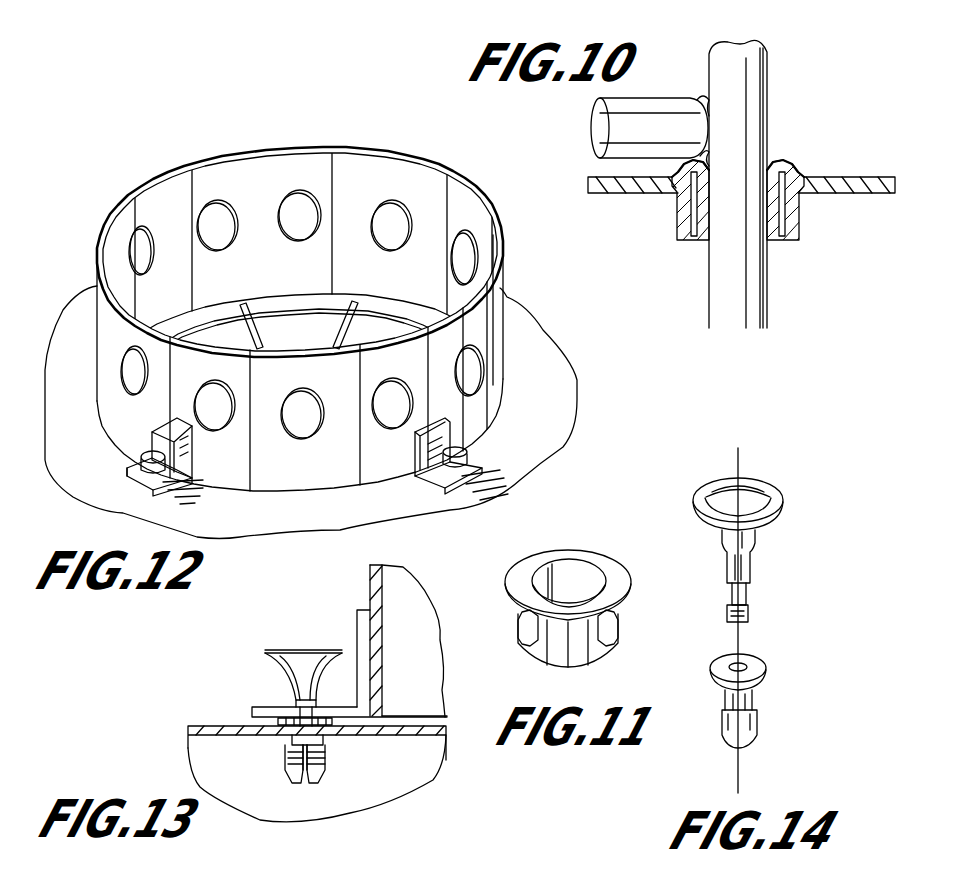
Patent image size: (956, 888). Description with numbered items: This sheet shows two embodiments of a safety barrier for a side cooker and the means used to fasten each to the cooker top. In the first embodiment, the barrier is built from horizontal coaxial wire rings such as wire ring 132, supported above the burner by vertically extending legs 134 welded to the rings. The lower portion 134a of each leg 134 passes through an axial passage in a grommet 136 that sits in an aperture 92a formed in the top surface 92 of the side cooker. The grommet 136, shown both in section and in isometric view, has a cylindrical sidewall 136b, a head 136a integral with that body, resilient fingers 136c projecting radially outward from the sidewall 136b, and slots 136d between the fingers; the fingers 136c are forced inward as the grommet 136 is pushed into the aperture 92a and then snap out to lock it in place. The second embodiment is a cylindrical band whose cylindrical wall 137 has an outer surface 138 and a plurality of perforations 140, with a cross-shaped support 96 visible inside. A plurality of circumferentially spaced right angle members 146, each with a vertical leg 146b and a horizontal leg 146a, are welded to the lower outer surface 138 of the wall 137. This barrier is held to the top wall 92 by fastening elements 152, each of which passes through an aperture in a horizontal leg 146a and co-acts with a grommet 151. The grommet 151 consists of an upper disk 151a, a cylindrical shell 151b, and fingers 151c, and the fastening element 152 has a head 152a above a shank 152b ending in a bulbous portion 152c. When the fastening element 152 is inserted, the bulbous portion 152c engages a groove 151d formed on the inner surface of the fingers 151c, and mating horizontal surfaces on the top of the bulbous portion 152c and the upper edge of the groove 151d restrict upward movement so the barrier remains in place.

In FIG. 12, the top surface 92 is at (528, 468).
In FIG. 10, the top surface 92 is at (642, 193).
In FIG. 13, the top surface 92 is at (203, 727).
In FIG. 10, the aperture 92a is at (688, 162).
In FIG. 12, the support struts 96 is at (257, 300).
In FIG. 10, the wire ring 132 is at (608, 115).
In FIG. 10, the leg 134 is at (748, 108).
In FIG. 10, the lower portion of leg 134a is at (752, 248).
In FIG. 11, the grommet 136 is at (572, 600).
In FIG. 10, the head 136a is at (792, 162).
In FIG. 11, the head 136a is at (612, 556).
In FIG. 11, the cylindrical sidewall 136b is at (558, 653).
In FIG. 10, the resilient fingers 136c is at (798, 206).
In FIG. 11, the resilient fingers 136c is at (620, 625).
In FIG. 11, the grommet slot 136d is at (560, 575).
In FIG. 12, the cylindrical wall 137 is at (325, 147).
In FIG. 12, the outer surface 138 is at (500, 305).
In FIG. 12, the perforations 140 is at (316, 226).
In FIG. 12, the right angle member 146 is at (425, 482).
In FIG. 12, the horizontal leg 146a is at (175, 474).
In FIG. 13, the horizontal leg 146a is at (360, 706).
In FIG. 12, the vertical leg 146b is at (180, 464).
In FIG. 13, the vertical leg 146b is at (358, 618).
In FIG. 13, the grommet 151 is at (304, 766).
In FIG. 14, the grommet 151 is at (750, 715).
In FIG. 13, the upper disk 151a is at (290, 723).
In FIG. 14, the upper disk 151a is at (750, 663).
In FIG. 13, the cylindrical shell 151b is at (293, 743).
In FIG. 14, the cylindrical shell 151b is at (727, 697).
In FIG. 13, the fingers 151c is at (325, 755).
In FIG. 14, the fingers 151c is at (737, 725).
In FIG. 13, the groove 151d is at (287, 763).
In FIG. 12, the fastening element 152 is at (472, 459).
In FIG. 13, the fastening element 152 is at (256, 665).
In FIG. 14, the fastening element 152 is at (782, 525).
In FIG. 13, the screw head 152a is at (297, 658).
In FIG. 14, the screw head 152a is at (770, 490).
In FIG. 13, the shank 152b is at (298, 700).
In FIG. 14, the shank 152b is at (752, 577).
In FIG. 14, the bulbous portion 152c is at (752, 617).